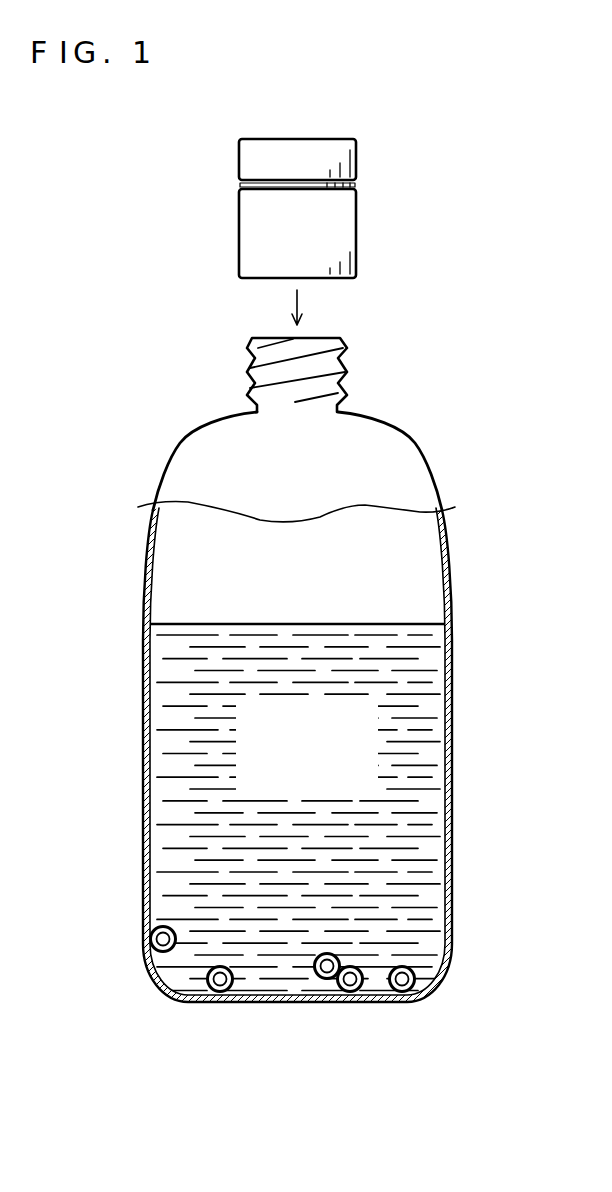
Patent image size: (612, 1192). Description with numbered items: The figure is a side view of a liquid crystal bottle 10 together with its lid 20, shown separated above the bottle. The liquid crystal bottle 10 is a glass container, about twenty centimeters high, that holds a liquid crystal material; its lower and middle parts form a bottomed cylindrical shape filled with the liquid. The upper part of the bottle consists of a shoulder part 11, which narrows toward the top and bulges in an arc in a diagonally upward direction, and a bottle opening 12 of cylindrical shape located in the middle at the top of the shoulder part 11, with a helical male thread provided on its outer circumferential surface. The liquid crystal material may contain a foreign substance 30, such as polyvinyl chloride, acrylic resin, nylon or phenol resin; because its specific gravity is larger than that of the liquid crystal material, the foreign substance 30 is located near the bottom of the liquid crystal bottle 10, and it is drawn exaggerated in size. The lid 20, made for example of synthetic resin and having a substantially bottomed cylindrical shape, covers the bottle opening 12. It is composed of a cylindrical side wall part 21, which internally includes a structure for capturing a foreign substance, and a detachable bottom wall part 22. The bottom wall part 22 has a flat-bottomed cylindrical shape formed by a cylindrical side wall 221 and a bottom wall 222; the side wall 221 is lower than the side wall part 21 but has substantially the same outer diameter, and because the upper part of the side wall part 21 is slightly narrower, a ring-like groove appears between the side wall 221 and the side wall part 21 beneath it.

The liquid crystal bottle 10 is at (472, 677).
The shoulder part 11 is at (162, 478).
The bottle opening 12 is at (346, 362).
The lid 20 is at (223, 155).
The side wall part 21 is at (352, 226).
The bottom wall part 22 is at (487, 95).
The side wall 221 is at (355, 160).
The bottom wall 222 is at (335, 139).
The foreign substance 30 is at (152, 938).